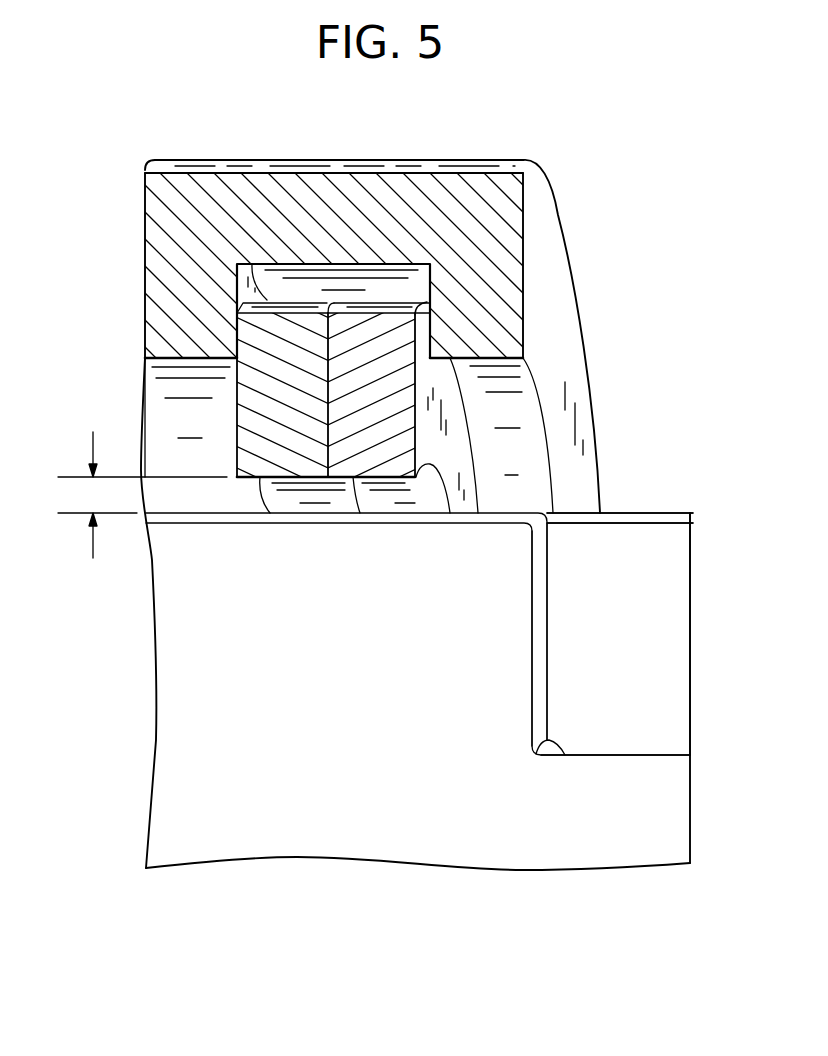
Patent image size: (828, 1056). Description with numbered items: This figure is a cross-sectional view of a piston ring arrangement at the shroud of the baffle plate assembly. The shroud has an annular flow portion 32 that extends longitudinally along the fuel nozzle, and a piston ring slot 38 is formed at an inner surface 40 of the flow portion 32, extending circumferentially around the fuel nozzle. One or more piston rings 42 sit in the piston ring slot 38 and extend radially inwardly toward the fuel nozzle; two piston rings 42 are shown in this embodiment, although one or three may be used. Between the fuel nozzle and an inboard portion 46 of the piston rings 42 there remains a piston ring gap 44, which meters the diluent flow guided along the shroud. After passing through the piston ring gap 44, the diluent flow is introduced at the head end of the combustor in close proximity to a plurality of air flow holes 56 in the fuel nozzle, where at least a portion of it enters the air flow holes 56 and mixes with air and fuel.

The flow portion 32 is at (483, 187).
The piston ring slot 38 is at (353, 275).
The inner surface 40 is at (188, 358).
The piston rings 42 is at (365, 330).
The piston ring gap 44 is at (92, 445).
The inboard portion 46 is at (375, 478).
The air flow holes 56 is at (623, 542).